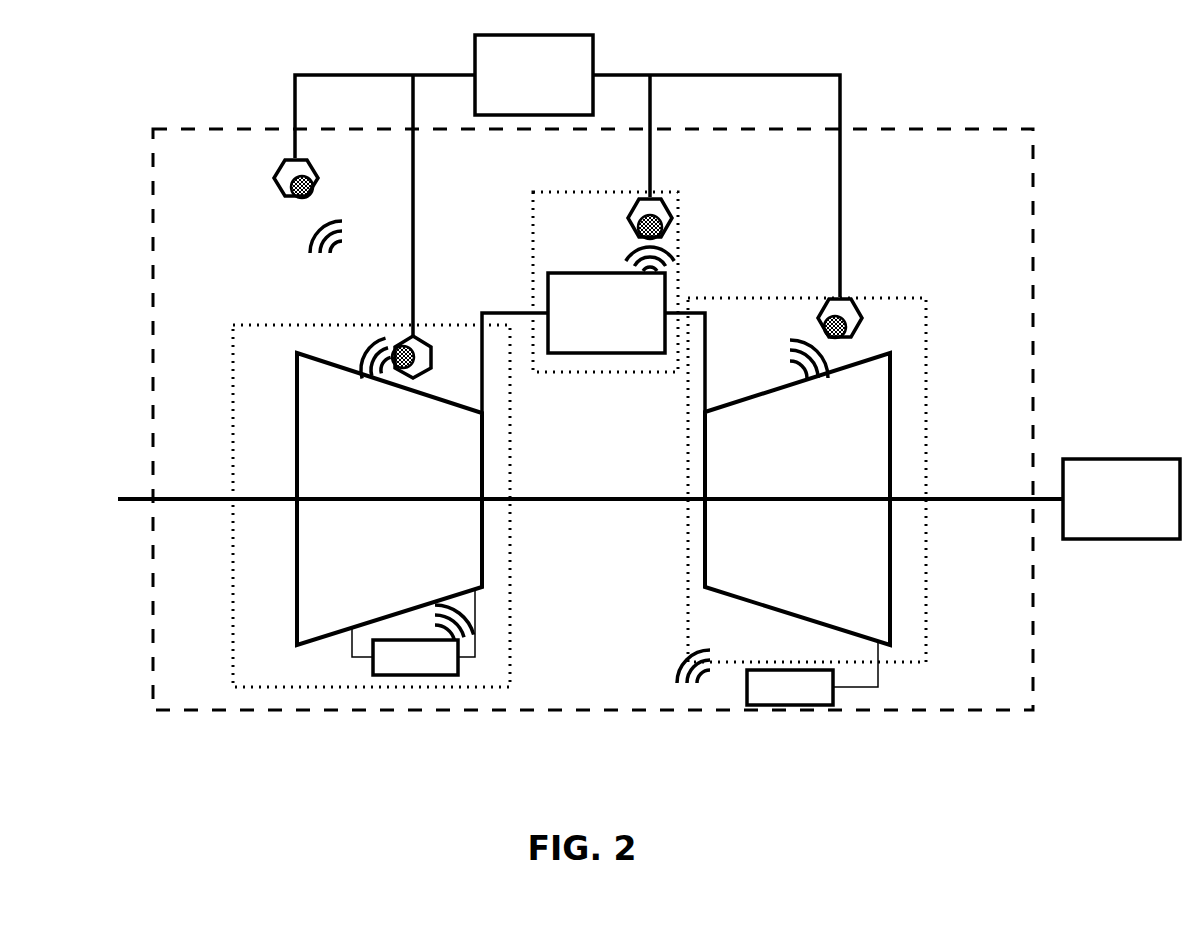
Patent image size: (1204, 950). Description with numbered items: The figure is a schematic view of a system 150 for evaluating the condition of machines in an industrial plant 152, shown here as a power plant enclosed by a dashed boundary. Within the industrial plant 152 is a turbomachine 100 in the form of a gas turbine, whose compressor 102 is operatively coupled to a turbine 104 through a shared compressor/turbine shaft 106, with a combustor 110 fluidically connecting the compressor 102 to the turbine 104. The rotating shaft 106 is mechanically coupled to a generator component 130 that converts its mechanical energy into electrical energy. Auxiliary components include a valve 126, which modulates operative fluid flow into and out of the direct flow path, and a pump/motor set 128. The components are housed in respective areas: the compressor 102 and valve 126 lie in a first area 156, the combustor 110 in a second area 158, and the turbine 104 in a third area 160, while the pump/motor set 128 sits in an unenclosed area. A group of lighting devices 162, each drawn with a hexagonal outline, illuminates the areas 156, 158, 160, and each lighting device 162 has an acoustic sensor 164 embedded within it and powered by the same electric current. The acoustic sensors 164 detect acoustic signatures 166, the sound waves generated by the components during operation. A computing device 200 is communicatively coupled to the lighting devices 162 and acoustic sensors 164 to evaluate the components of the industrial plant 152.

The turbomachine 100 is at (272, 306).
The compressor 102 is at (389, 499).
The turbine 104 is at (797, 499).
The compressor/turbine shaft 106 is at (557, 500).
The combustor 110 is at (606, 313).
The valve 126 is at (413, 632).
The pump/motor set 128 is at (812, 673).
The generator component 130 is at (1121, 499).
The system 150 is at (541, 380).
The industrial plant 152 is at (937, 128).
The first area 156 is at (233, 605).
The second area 158 is at (535, 227).
The third area 160 is at (928, 358).
The lighting device 162 is at (276, 184).
The acoustic sensor 164 is at (315, 185).
The acoustic signature 166 is at (343, 230).
The computing device 200 is at (534, 75).